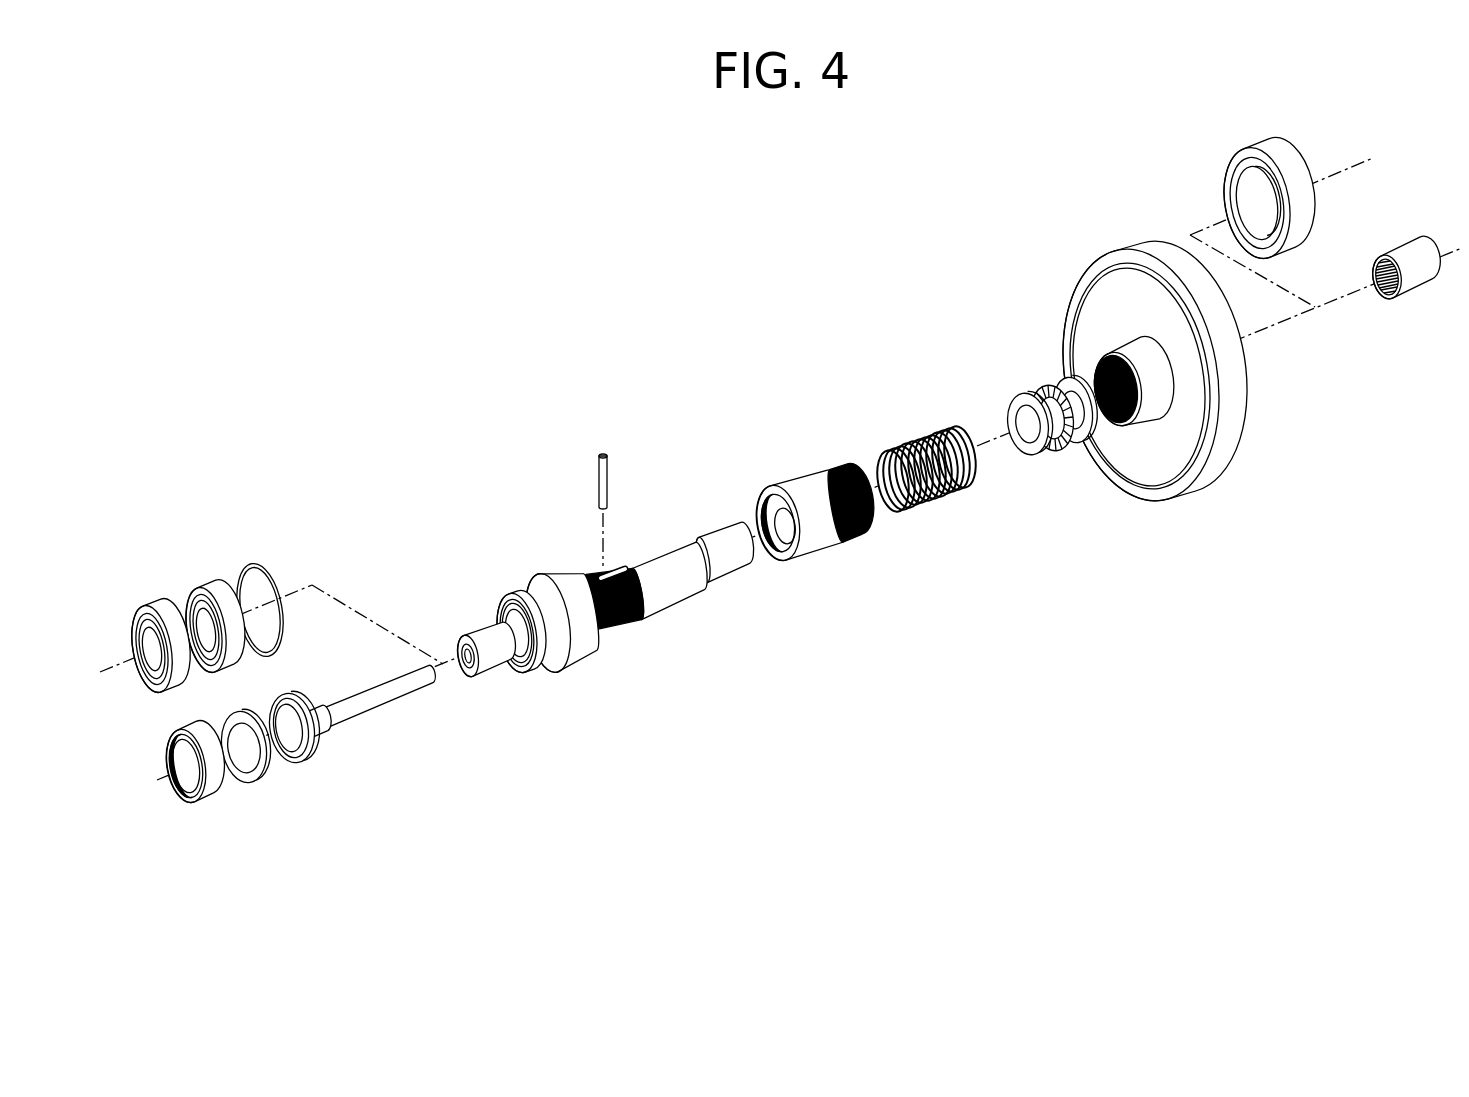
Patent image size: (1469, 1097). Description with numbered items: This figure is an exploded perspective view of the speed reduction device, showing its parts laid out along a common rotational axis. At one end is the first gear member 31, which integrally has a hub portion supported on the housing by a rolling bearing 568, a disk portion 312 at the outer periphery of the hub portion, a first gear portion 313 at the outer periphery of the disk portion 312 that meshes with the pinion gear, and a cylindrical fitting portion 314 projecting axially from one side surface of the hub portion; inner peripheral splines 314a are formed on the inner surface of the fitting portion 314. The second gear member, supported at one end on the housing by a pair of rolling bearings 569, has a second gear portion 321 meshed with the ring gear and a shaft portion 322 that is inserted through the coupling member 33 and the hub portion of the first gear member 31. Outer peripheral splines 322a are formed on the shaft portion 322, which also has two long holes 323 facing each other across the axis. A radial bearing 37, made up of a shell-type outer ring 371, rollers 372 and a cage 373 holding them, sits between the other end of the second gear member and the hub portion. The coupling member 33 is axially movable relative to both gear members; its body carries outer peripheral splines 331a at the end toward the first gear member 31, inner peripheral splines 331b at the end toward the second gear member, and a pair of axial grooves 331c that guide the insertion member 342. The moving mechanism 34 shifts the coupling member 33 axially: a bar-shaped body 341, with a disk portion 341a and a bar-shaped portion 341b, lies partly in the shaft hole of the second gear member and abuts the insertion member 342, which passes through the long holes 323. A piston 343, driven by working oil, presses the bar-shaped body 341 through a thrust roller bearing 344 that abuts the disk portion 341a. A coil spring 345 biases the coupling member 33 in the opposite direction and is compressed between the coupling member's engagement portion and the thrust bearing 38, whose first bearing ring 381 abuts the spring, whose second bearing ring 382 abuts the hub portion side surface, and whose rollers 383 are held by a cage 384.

The first gear member 31 is at (1149, 370).
The disk portion 312 is at (1165, 450).
The first gear portion 313 is at (1225, 465).
The cylindrical fitting portion 314 is at (1147, 426).
The inner peripheral splines 314a is at (1100, 365).
The second gear portion 321 is at (562, 652).
The shaft portion 322 is at (668, 597).
The outer peripheral splines 322a is at (619, 629).
The long holes 323 is at (626, 566).
The coupling member 33 is at (774, 512).
The outer peripheral splines 331a is at (833, 468).
The inner peripheral splines 331b is at (757, 517).
The axial grooves 331c is at (772, 558).
The moving mechanism 34 is at (330, 740).
The bar-shaped body 341 is at (349, 723).
The disk portion 341a is at (302, 763).
The bar-shaped portion 341b is at (368, 703).
The insertion member 342 is at (609, 478).
The piston 343 is at (190, 798).
The bearing 344 is at (253, 780).
The coil spring 345 is at (898, 449).
The radial bearing 37 is at (1400, 266).
The shell-type outer ring 371 is at (1416, 287).
The rollers 372 is at (1378, 292).
The cage 373 is at (1393, 303).
The thrust bearing 38 is at (1024, 422).
The first bearing ring 381 is at (1030, 453).
The second bearing ring 382 is at (1085, 442).
The rollers 383 is at (1055, 451).
The cage 384 is at (1040, 386).
The rolling bearing 568 is at (1280, 165).
The rolling bearings 569 is at (198, 585).